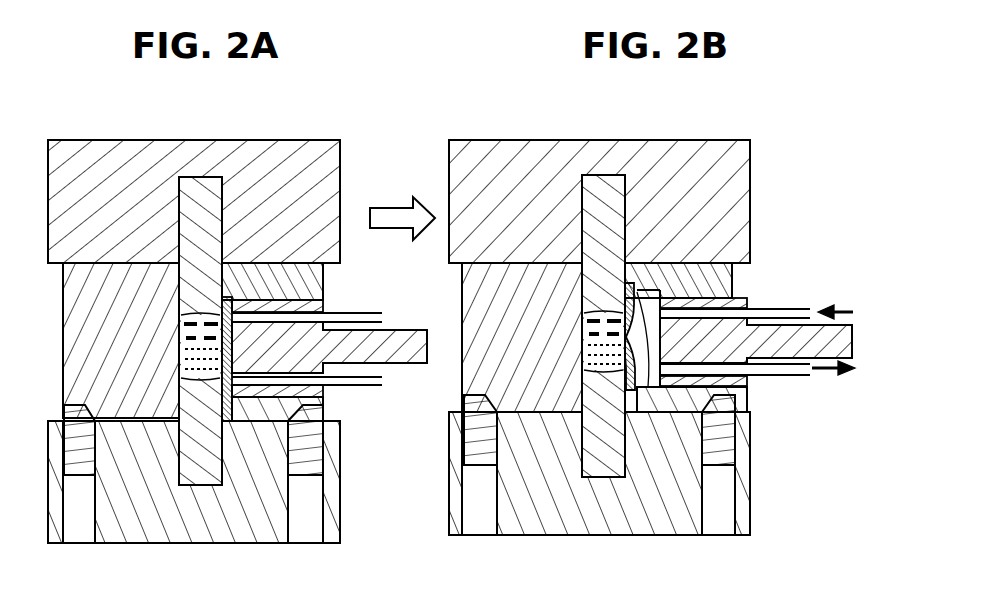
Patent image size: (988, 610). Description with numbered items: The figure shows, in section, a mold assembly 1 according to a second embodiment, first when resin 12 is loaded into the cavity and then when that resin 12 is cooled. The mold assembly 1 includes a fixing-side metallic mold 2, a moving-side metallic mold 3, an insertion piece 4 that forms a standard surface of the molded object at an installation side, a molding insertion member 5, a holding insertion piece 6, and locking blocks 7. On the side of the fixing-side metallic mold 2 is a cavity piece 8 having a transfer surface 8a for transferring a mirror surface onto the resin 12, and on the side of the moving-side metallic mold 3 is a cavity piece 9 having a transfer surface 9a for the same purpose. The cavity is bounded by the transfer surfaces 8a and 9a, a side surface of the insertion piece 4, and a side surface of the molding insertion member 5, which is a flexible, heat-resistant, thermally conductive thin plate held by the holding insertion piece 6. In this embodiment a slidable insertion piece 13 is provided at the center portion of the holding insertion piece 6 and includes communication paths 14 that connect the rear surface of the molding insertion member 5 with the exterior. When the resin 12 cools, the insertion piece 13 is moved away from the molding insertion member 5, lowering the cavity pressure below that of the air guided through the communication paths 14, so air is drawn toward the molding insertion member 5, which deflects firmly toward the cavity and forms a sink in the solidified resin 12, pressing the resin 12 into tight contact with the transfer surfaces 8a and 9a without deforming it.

In FIG. 2A, the mold assembly 1 is at (76, 120).
In FIG. 2B, the mold assembly 1 is at (472, 115).
In FIG. 2A, the fixing-side metallic mold 2 is at (72, 143).
In FIG. 2B, the fixing-side metallic mold 2 is at (468, 142).
In FIG. 2A, the moving-side metallic mold 3 is at (185, 525).
In FIG. 2B, the moving-side metallic mold 3 is at (565, 515).
In FIG. 2A, the insertion piece 4 is at (78, 318).
In FIG. 2B, the insertion piece 4 is at (462, 343).
In FIG. 2A, the molding insertion member 5 is at (228, 400).
In FIG. 2B, the molding insertion member 5 is at (637, 400).
In FIG. 2A, the holding insertion piece 6 is at (258, 400).
In FIG. 2B, the holding insertion piece 6 is at (660, 400).
In FIG. 2A, the locking blocks 7 is at (72, 405).
In FIG. 2B, the locking blocks 7 is at (470, 396).
In FIG. 2A, the cavity piece 8 is at (202, 183).
In FIG. 2B, the cavity piece 8 is at (600, 180).
In FIG. 2A, the transfer surface 8a is at (200, 318).
In FIG. 2B, the transfer surface 8a is at (598, 310).
In FIG. 2A, the cavity piece 9 is at (200, 380).
In FIG. 2B, the cavity piece 9 is at (583, 445).
In FIG. 2A, the transfer surface 9a is at (208, 487).
In FIG. 2B, the transfer surface 9a is at (618, 479).
In FIG. 2A, the resin 12 is at (182, 347).
In FIG. 2B, the resin 12 is at (604, 342).
In FIG. 2A, the slidable insertion piece 13 is at (405, 330).
In FIG. 2B, the slidable insertion piece 13 is at (820, 325).
In FIG. 2A, the communication paths 14 is at (368, 312).
In FIG. 2B, the communication paths 14 is at (797, 308).